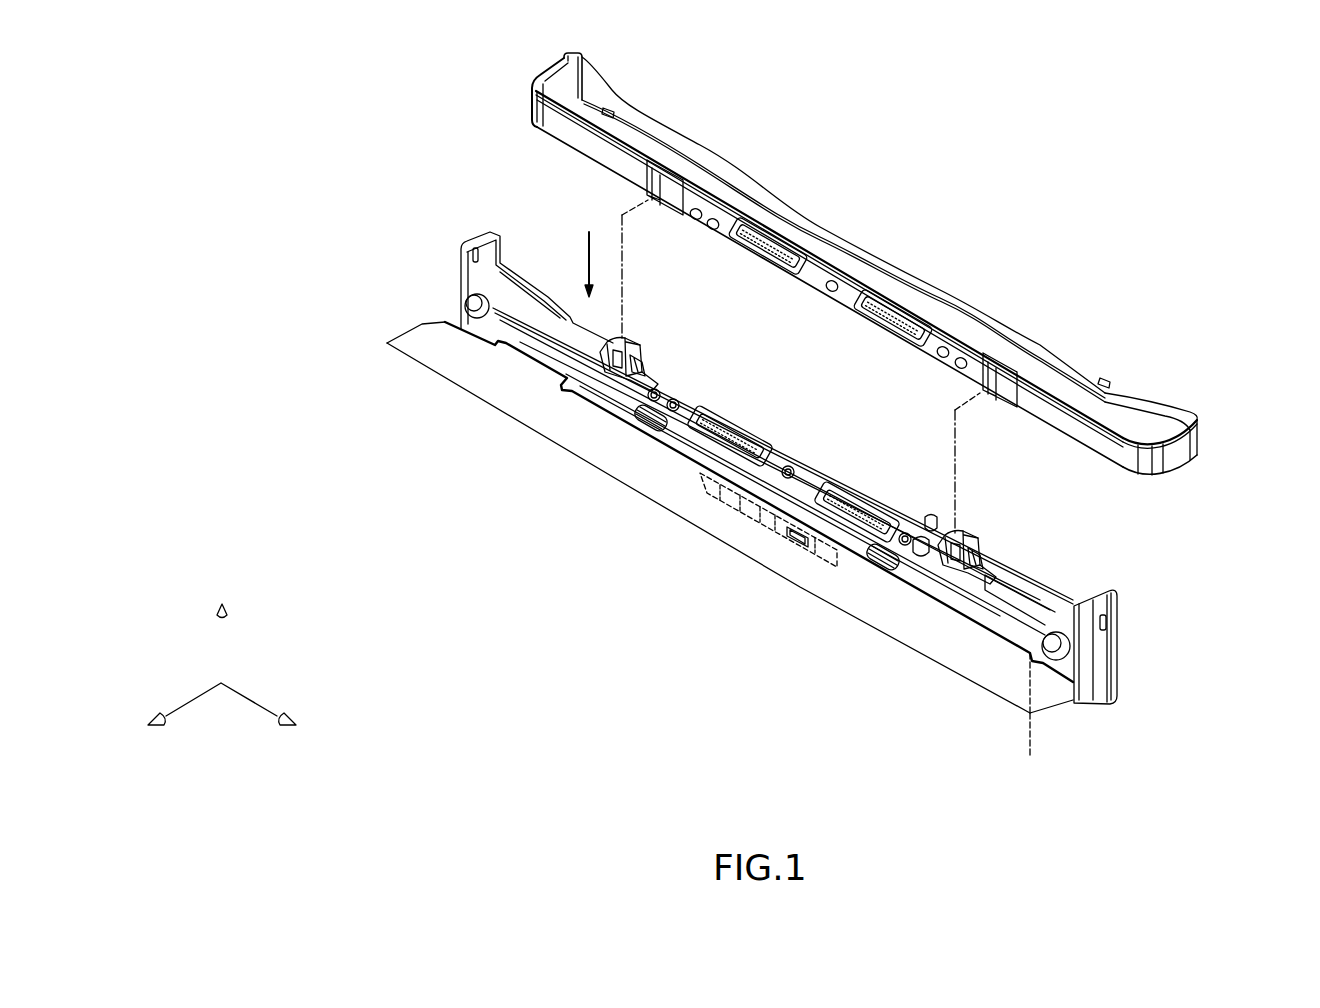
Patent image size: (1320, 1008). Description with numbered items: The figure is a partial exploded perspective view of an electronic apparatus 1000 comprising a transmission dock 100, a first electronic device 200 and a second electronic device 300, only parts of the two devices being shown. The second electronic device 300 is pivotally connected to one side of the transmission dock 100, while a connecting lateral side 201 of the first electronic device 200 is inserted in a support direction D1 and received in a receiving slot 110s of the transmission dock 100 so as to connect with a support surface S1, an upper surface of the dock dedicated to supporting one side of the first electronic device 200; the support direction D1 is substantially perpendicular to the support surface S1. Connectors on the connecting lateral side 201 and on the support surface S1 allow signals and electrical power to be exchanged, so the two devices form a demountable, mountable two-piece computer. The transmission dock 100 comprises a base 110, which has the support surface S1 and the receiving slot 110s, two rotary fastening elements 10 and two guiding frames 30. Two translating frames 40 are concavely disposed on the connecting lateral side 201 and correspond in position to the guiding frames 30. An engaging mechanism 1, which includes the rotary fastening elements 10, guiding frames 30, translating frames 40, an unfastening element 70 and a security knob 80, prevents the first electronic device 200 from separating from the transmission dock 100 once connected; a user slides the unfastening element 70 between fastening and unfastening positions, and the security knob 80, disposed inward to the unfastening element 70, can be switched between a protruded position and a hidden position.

The electronic apparatus 1000 is at (707, 412).
The engaging mechanism 1 is at (821, 350).
The rotary fastening elements 10 is at (662, 365).
The guiding frames 30 is at (636, 332).
The translating frames 40 is at (659, 214).
The unfastening element 70 is at (730, 503).
The security knob 80 is at (790, 540).
The transmission dock 100 is at (1130, 646).
The base 110 is at (1114, 664).
The receiving slot 110s is at (1077, 590).
The first electronic device 200 is at (1185, 469).
The connecting lateral side 201 is at (1110, 447).
The second electronic device 300 is at (1065, 748).
The support surface S1 is at (1028, 608).
The support direction D1 is at (574, 264).